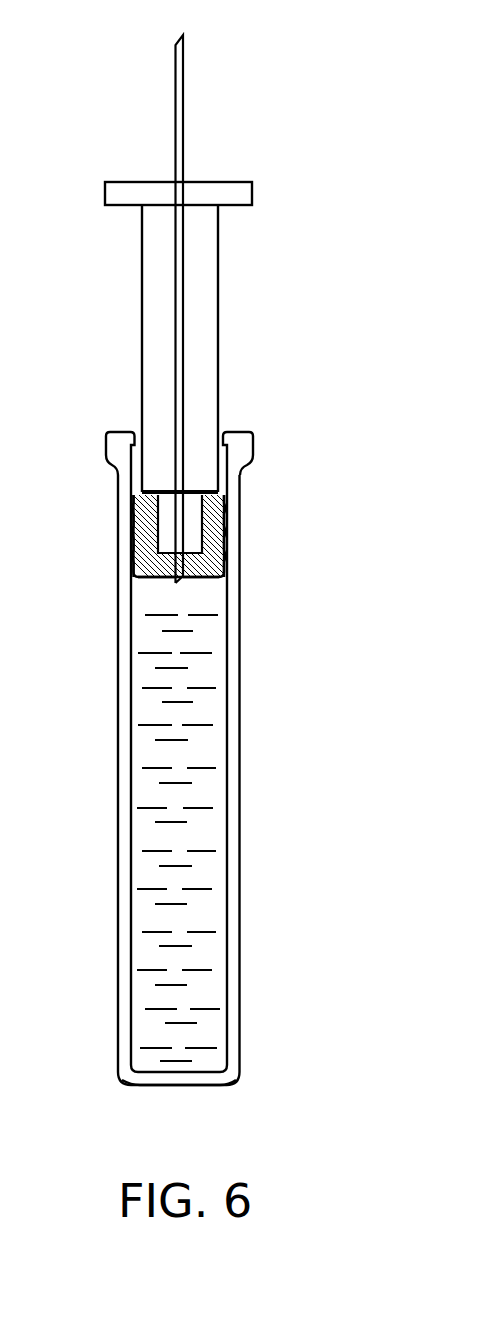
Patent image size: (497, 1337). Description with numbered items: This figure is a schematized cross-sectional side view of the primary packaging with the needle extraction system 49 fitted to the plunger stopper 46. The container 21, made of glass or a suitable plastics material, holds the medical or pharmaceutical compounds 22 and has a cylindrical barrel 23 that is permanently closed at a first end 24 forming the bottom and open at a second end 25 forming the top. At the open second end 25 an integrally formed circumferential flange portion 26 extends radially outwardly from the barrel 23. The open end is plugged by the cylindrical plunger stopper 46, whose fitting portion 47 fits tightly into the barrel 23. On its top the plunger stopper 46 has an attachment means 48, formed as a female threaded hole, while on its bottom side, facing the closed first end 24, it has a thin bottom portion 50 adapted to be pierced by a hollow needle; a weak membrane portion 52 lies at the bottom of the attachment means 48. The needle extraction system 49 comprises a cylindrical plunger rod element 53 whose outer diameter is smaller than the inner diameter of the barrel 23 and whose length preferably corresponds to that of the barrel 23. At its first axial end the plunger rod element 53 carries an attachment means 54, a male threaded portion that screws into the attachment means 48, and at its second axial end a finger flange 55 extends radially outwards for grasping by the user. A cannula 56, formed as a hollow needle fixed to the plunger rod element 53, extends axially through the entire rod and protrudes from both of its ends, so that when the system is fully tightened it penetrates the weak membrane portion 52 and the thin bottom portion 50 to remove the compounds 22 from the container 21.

The container 21 is at (313, 527).
The medical or pharmaceutical compounds 22 is at (198, 689).
The cylindrical barrel 23 is at (240, 649).
The first end 24 is at (163, 1086).
The open second end 25 is at (277, 405).
The flange portion 26 is at (244, 449).
The plunger stopper 46 is at (133, 546).
The fitting portion 47 is at (225, 547).
The attachment means 48 is at (133, 514).
The needle extraction system 49 is at (279, 112).
The thin bottom portion 50 is at (168, 577).
The weak membrane portion 52 is at (203, 578).
The plunger rod element 53 is at (208, 302).
The attachment means 54 is at (192, 517).
The finger flange 55 is at (245, 192).
The cannula 56 is at (179, 128).